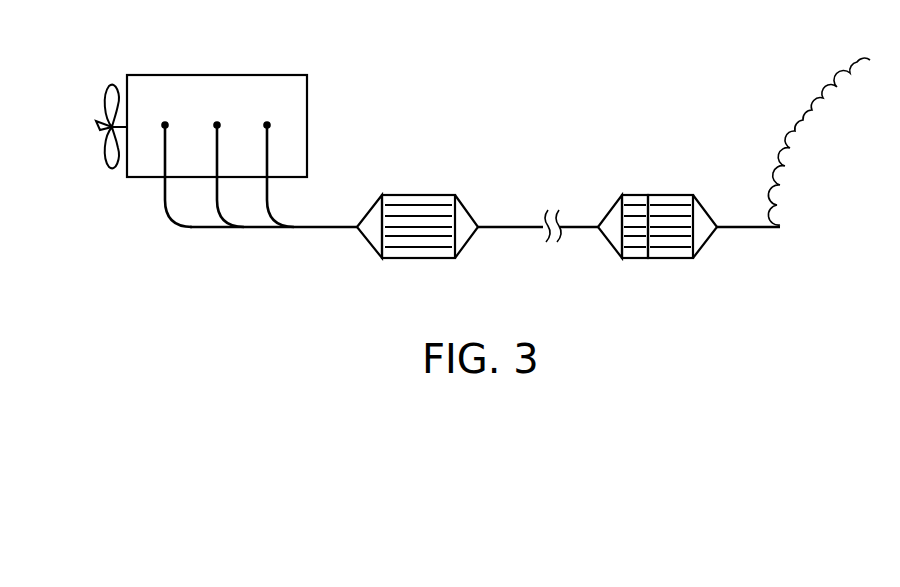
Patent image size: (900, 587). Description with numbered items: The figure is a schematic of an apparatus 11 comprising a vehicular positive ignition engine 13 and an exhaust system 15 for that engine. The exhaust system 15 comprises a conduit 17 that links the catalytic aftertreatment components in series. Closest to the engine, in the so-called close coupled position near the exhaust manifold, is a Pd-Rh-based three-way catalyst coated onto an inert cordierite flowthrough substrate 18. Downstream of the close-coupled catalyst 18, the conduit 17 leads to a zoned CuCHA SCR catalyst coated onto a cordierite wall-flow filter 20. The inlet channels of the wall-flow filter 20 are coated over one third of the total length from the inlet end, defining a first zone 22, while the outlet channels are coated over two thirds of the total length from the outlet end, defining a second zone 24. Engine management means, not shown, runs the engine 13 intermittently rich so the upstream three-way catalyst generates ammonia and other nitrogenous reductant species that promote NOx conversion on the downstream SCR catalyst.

The apparatus 11 is at (613, 80).
The vehicular positive ignition engine 13 is at (284, 75).
The exhaust system 15 is at (649, 246).
The conduit 17 is at (325, 233).
The flowthrough substrate 18 is at (431, 193).
The wall-flow filter 20 is at (670, 193).
The first zone 22 is at (632, 205).
The second zone 24 is at (677, 255).